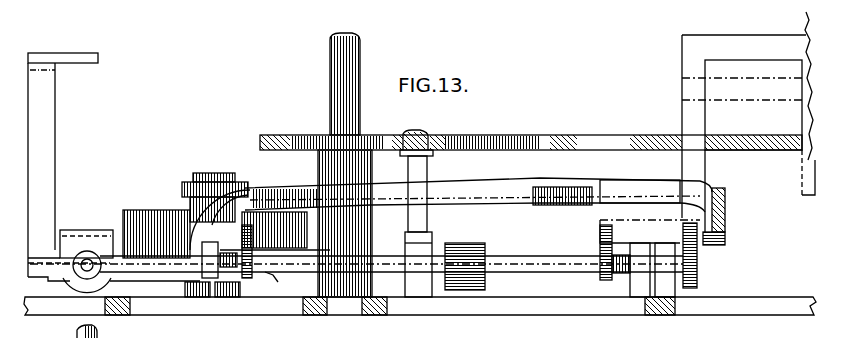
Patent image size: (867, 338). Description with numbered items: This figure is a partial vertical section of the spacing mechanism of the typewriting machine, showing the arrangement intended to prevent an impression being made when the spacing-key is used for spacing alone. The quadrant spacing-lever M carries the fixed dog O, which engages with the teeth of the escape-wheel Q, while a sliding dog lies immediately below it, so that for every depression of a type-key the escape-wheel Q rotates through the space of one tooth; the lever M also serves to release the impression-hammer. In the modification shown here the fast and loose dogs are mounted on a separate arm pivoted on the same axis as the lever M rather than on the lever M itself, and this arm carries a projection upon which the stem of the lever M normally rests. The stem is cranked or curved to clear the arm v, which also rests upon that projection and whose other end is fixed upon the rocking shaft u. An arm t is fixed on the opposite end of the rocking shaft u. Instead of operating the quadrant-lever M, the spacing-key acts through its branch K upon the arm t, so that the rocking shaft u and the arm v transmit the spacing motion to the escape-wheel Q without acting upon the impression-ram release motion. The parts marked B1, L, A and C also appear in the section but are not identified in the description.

The horizontal bar B1 is at (567, 140).
The frame L is at (684, 38).
The arm A is at (535, 181).
The escape-wheel Q is at (148, 212).
The quadrant spacing-lever M is at (190, 210).
The branch of the spacing-key K is at (616, 188).
The arm v is at (245, 238).
The fixed dog O is at (285, 282).
The rocking shaft u is at (508, 259).
The arm t is at (612, 236).
The gear C is at (698, 251).